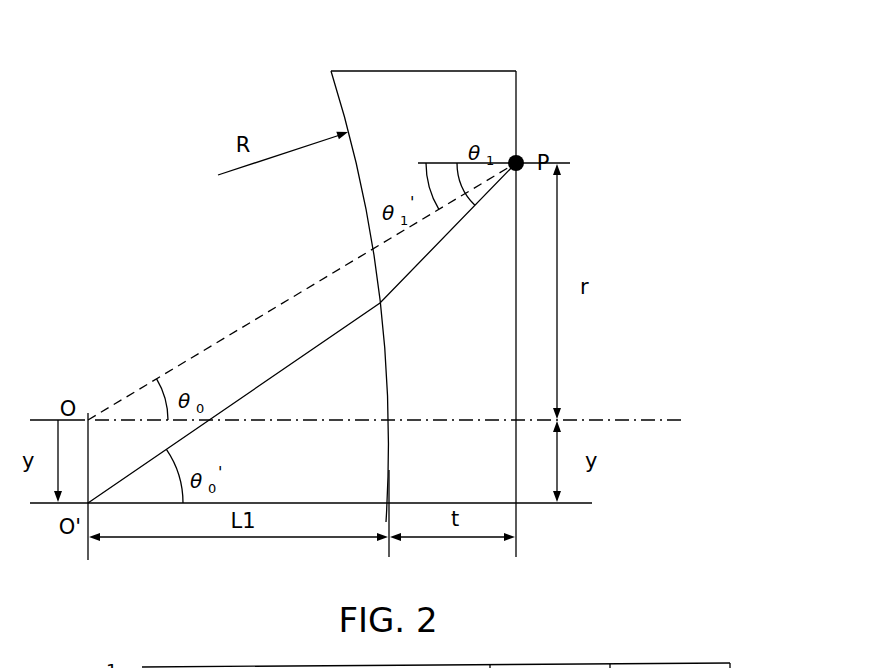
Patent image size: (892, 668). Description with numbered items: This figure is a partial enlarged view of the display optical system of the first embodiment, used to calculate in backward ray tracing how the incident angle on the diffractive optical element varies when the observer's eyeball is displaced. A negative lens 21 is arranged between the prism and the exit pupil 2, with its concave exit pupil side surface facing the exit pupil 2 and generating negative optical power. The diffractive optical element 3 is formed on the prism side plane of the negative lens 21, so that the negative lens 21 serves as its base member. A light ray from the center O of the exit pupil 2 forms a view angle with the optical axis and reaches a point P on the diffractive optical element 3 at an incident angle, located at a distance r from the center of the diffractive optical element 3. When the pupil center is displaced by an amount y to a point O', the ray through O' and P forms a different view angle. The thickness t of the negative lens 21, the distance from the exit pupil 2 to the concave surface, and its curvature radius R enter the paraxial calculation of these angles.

The negative lens 21 is at (412, 80).
The diffractive optical element 3 is at (516, 122).
The exit pupil 2 is at (90, 395).